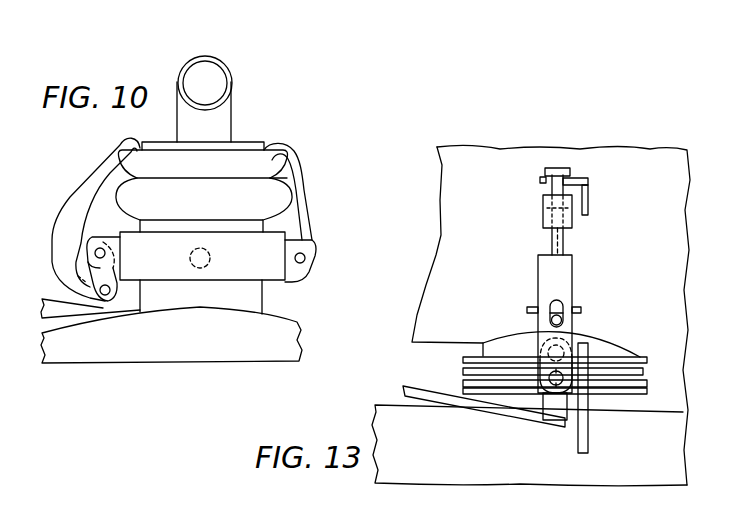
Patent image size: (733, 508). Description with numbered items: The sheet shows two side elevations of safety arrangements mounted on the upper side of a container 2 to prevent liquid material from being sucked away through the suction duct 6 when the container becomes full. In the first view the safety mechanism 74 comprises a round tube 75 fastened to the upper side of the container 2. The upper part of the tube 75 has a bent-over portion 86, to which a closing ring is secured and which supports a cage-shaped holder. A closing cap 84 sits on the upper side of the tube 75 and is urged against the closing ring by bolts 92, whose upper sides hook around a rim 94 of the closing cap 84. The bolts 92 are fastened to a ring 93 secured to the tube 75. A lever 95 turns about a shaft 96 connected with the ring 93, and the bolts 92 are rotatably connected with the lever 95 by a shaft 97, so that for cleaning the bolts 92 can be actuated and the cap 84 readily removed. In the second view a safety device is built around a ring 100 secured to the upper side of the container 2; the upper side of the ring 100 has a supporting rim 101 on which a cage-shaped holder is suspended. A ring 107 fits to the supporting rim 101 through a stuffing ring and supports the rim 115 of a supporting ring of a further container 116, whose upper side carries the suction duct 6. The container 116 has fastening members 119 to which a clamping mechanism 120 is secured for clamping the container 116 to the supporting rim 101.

In FIG. 10, the container 2 is at (298, 336).
In FIG. 13, the container 2 is at (387, 405).
In FIG. 10, the suction duct 6 is at (225, 66).
In FIG. 10, the safety mechanism 74 is at (302, 184).
In FIG. 10, the round tube 75 is at (208, 305).
In FIG. 10, the closing cap 84 is at (162, 141).
In FIG. 10, the bent-over portion 86 is at (200, 178).
In FIG. 10, the bolts 92 is at (311, 217).
In FIG. 10, the ring 93 is at (275, 282).
In FIG. 10, the rim 94 is at (238, 158).
In FIG. 10, the lever 95 is at (60, 297).
In FIG. 10, the shaft 96 is at (98, 243).
In FIG. 10, the shaft 97 is at (109, 301).
In FIG. 13, the ring 100 is at (617, 411).
In FIG. 13, the supporting rim 101 is at (648, 392).
In FIG. 13, the ring 107 is at (460, 372).
In FIG. 13, the rim 115 is at (643, 360).
In FIG. 13, the container 116 is at (450, 190).
In FIG. 13, the fastening members 119 is at (541, 181).
In FIG. 13, the clamping mechanism 120 is at (575, 287).